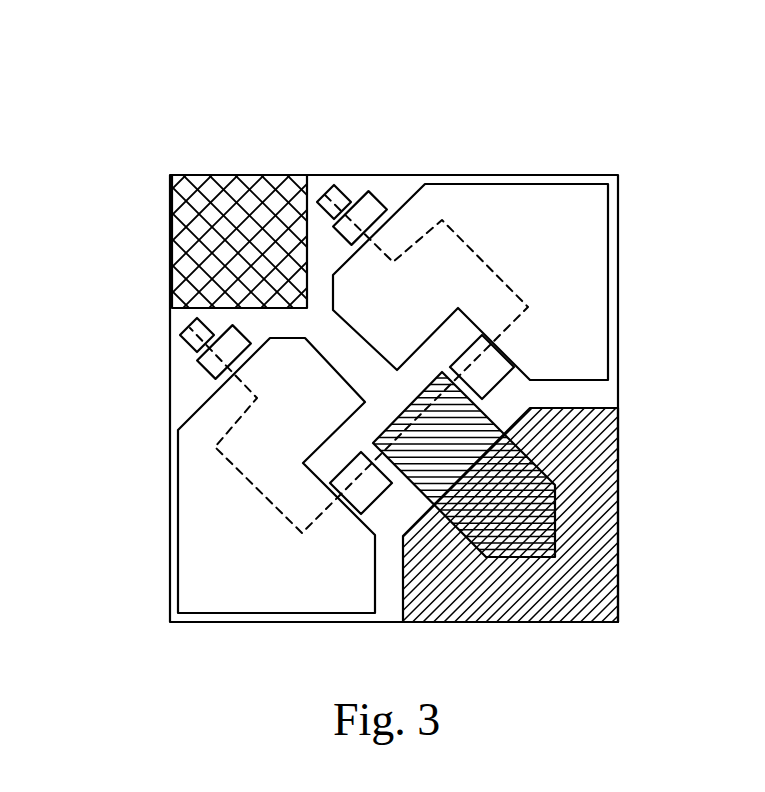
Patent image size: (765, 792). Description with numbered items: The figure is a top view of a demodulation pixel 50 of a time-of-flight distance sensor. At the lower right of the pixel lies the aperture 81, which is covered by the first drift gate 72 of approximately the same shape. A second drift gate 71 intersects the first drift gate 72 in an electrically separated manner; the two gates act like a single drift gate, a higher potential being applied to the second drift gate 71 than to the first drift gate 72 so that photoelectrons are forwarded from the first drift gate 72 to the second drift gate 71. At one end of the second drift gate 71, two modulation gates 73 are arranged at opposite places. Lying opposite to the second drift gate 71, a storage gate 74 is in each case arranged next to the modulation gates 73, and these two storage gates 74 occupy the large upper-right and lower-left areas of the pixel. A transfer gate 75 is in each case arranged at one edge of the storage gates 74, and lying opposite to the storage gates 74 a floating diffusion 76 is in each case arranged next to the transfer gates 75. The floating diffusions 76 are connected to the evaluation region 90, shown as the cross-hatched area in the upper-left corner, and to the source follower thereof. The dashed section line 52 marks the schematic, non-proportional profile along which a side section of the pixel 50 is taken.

The demodulation pixel 50 is at (206, 124).
The section line 52 is at (498, 277).
The second drift gate 71 is at (430, 441).
The first drift gate 72 is at (557, 462).
The modulation gates 73 is at (477, 370).
The storage gate 74 is at (528, 227).
The transfer gate 75 is at (372, 203).
The floating diffusion 76 is at (332, 190).
The aperture 81 is at (572, 513).
The evaluation region 90 is at (206, 244).